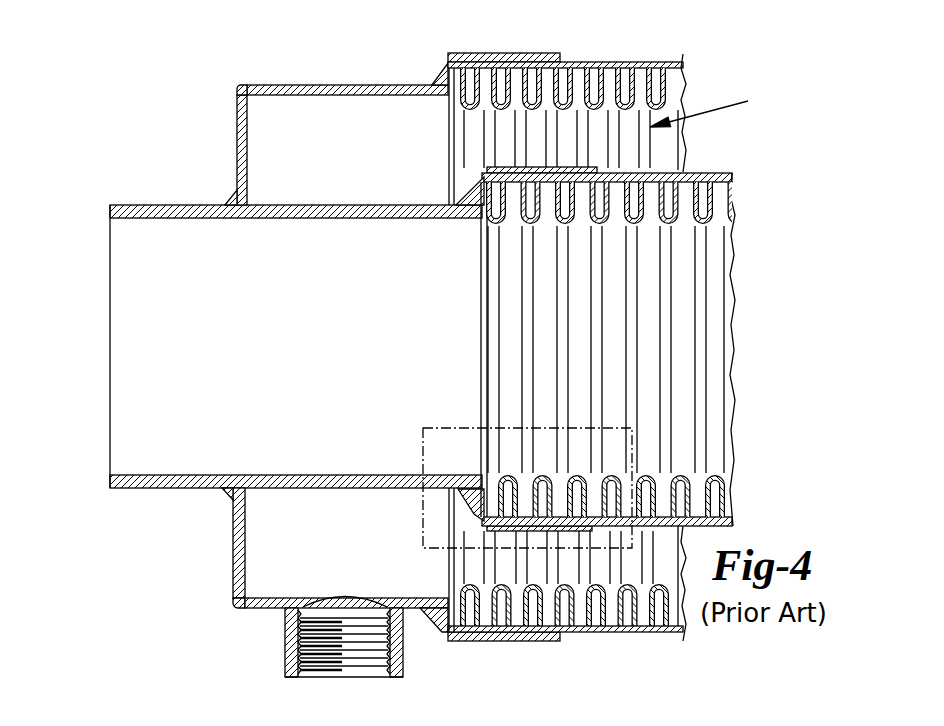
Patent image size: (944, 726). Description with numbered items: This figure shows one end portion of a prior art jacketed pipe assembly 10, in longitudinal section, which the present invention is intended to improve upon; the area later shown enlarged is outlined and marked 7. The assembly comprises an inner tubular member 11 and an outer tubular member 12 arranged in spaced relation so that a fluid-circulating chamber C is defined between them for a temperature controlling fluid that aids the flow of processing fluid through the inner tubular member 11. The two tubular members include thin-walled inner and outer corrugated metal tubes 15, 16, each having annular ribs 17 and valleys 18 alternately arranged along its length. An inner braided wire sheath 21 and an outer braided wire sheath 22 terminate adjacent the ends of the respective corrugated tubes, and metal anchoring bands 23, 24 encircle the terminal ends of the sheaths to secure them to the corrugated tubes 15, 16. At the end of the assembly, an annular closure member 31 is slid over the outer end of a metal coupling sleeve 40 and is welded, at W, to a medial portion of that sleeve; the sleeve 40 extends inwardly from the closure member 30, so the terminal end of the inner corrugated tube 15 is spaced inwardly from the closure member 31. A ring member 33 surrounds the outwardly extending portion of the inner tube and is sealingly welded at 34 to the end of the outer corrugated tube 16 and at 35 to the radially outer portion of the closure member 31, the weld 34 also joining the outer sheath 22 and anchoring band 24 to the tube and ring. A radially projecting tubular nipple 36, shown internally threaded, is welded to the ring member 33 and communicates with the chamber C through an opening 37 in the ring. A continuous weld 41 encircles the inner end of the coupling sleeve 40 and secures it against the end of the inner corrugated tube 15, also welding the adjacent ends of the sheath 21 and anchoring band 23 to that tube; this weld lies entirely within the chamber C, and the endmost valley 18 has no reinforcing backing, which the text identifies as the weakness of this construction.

The jacketed pipe assembly 10 is at (634, 334).
The inner tubular member 11 is at (633, 349).
The outer tubular member 12 is at (582, 315).
The inner corrugated tube 15 is at (728, 206).
The outer corrugated tube 16 is at (685, 87).
The annular ribs 17 is at (585, 66).
The valleys 18 is at (604, 78).
The inner braided wire sheath 21 is at (714, 175).
The outer braided wire sheath 22 is at (655, 62).
The anchoring band 23 is at (506, 170).
The anchoring band 24 is at (522, 20).
The closure member 30 is at (315, 106).
The closure member 31 is at (248, 153).
The ring member 33 is at (348, 85).
The weld 34 is at (433, 82).
The weld 35 is at (238, 86).
The tubular nipple 36 is at (286, 647).
The opening 37 is at (334, 558).
The metal coupling sleeve 40 is at (158, 205).
The continuous weld 41 is at (465, 197).
The section indicator 7 is at (442, 426).
The fluid-circulating chamber C is at (715, 103).
The weld W is at (228, 198).